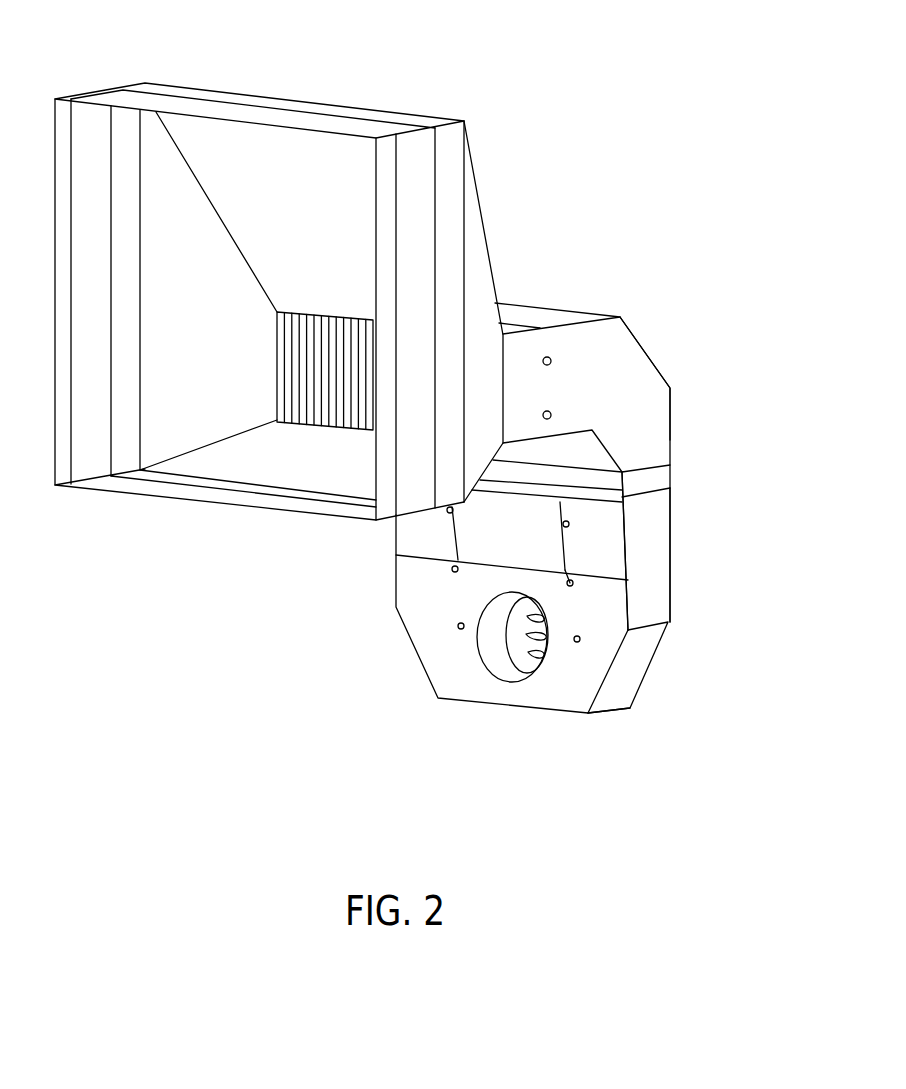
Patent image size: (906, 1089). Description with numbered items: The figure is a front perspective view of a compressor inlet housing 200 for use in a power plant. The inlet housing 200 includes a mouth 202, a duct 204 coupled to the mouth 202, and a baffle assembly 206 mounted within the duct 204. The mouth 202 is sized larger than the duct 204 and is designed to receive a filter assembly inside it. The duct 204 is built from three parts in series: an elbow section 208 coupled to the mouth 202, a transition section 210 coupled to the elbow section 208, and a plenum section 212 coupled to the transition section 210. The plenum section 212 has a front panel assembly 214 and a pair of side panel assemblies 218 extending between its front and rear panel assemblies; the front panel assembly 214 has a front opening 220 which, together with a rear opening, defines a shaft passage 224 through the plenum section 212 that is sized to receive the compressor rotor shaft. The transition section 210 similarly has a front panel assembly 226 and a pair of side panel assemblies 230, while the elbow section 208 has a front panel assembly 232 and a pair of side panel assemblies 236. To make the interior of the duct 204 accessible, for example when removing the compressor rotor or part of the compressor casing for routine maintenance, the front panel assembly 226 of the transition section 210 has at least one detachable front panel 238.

The compressor inlet housing 200 is at (639, 73).
The mouth 202 is at (487, 157).
The duct 204 is at (691, 377).
The baffle assembly 206 is at (293, 398).
The elbow section 208 is at (635, 314).
The transition section 210 is at (691, 519).
The plenum section 212 is at (681, 665).
The front panel assembly 214 is at (427, 646).
The side panel assemblies 218 is at (634, 693).
The front opening 220 is at (483, 683).
The shaft passage 224 is at (487, 615).
The front panel assembly 226 is at (614, 563).
The side panel assemblies 230 is at (667, 554).
The front panel assembly 232 is at (589, 465).
The side panel assemblies 236 is at (656, 416).
The detachable front panel 238 is at (482, 527).